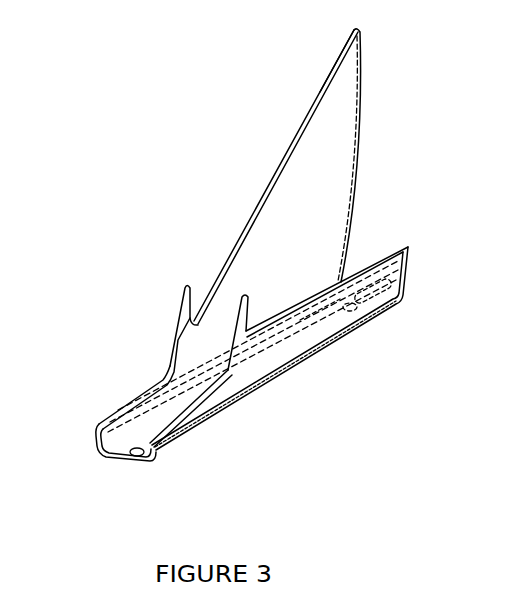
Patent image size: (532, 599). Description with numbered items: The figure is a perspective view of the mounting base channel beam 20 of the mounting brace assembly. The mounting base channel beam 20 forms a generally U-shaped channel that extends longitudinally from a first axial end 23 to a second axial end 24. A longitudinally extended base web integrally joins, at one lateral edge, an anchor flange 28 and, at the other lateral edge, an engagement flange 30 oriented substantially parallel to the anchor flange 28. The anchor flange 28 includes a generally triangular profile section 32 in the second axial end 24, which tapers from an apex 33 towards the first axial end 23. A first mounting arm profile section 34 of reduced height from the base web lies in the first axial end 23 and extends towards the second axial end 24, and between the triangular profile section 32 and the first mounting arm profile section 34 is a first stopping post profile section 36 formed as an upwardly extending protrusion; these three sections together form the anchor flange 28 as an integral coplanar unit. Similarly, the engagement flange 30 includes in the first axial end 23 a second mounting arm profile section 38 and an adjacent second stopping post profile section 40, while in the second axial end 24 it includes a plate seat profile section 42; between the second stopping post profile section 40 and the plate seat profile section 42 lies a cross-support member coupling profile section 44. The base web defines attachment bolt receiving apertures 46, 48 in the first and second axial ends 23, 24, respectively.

The mounting base channel beam 20 is at (185, 198).
The first axial end 23 is at (118, 452).
The second axial end 24 is at (393, 272).
The anchor flange 28 is at (349, 108).
The engagement flange 30 is at (323, 308).
The triangular profile section 32 is at (298, 153).
The apex 33 is at (345, 61).
The first mounting arm profile section 34 is at (143, 405).
The first stopping post profile section 36 is at (183, 298).
The second mounting arm profile section 38 is at (182, 415).
The second stopping post profile section 40 is at (239, 312).
The plate seat profile section 42 is at (360, 282).
The cross-support member coupling profile section 44 is at (285, 316).
The attachment bolt receiving aperture 46 is at (136, 455).
The attachment bolt receiving aperture 48 is at (362, 308).